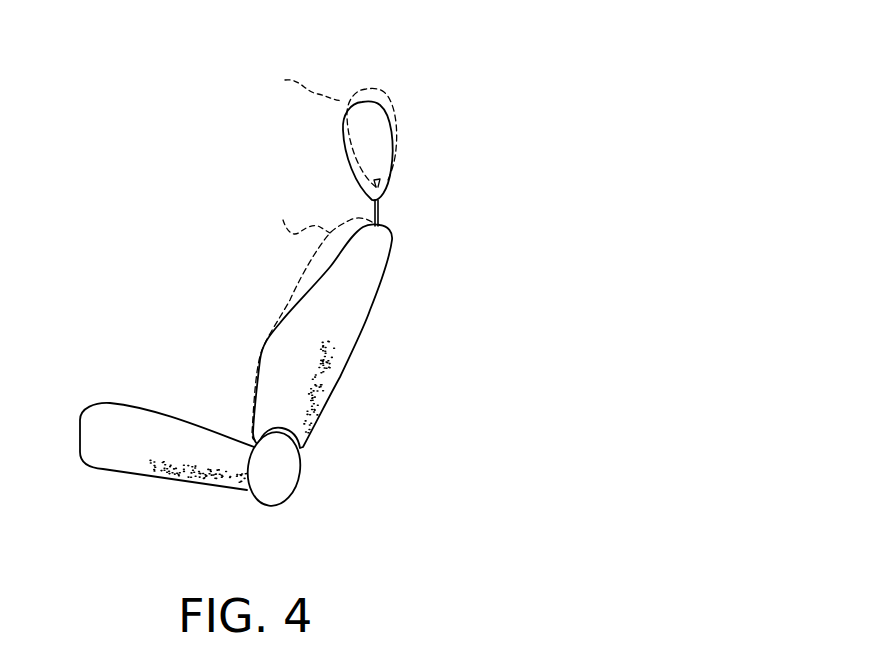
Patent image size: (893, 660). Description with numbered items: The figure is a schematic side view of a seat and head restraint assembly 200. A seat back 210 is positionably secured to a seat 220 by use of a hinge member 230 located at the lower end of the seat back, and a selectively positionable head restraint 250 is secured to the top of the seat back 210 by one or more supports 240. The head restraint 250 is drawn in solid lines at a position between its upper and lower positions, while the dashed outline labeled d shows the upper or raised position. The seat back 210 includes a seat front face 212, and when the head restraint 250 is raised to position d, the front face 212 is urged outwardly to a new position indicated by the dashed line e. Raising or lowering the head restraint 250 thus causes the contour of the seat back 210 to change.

The seat and head restraint assembly 200 is at (546, 91).
The seat back 210 is at (343, 310).
The seat front face 212 is at (260, 343).
The seat 220 is at (115, 460).
The hinge member 230 is at (282, 473).
The support 240 is at (378, 212).
The head restraint 250 is at (385, 152).